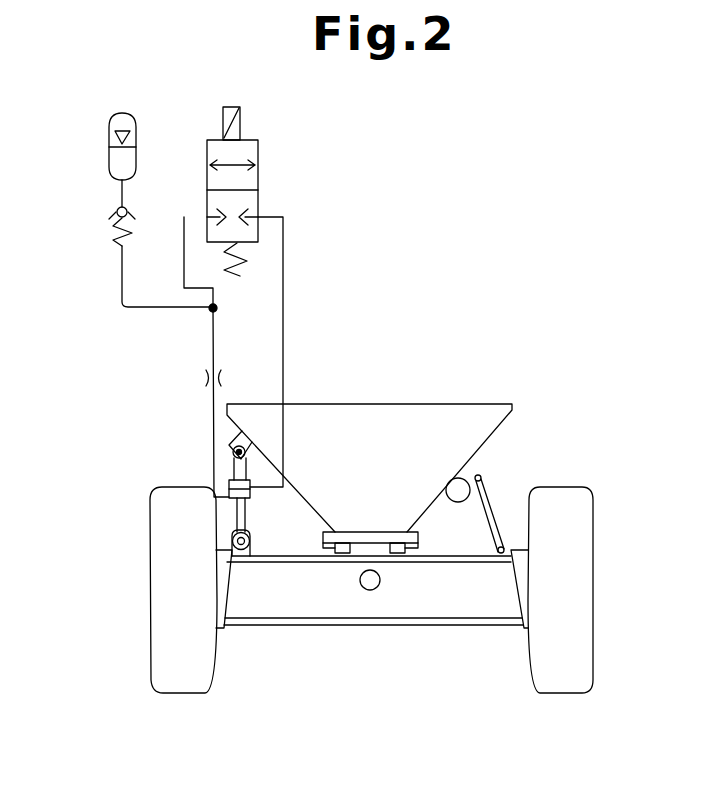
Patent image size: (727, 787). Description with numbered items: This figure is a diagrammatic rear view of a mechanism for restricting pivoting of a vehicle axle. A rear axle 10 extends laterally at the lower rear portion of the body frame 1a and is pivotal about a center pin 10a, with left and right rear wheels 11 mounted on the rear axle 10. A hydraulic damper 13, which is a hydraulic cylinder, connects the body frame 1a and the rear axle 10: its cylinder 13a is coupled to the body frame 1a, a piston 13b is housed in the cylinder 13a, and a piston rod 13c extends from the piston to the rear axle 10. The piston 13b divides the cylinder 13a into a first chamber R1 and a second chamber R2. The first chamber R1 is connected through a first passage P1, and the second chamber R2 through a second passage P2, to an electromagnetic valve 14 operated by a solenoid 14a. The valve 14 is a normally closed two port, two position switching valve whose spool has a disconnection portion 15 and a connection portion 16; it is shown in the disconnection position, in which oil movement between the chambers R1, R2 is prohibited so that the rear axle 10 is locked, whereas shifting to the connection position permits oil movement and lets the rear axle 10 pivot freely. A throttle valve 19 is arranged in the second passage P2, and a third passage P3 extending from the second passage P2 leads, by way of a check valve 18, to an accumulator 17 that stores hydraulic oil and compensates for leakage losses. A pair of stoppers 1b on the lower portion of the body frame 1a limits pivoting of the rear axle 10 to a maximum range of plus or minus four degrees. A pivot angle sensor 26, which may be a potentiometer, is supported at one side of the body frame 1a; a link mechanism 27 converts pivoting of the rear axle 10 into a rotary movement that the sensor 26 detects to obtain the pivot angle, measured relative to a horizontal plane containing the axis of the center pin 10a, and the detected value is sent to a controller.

The body frame 1a is at (490, 432).
The stoppers 1b is at (326, 553).
The rear axle 10 is at (372, 610).
The center pin 10a is at (370, 592).
The rear wheels 11 is at (152, 670).
The hydraulic damper 13 is at (255, 507).
The cylinder 13a is at (247, 512).
The piston 13b is at (258, 500).
The piston rod 13c is at (252, 548).
The electromagnetic valve 14 is at (252, 133).
The solenoid 14a is at (232, 107).
The disconnection portion 15 is at (206, 208).
The connection portion 16 is at (254, 180).
The accumulator 17 is at (108, 136).
The check valve 18 is at (113, 211).
The throttle valve 19 is at (206, 378).
The pivot angle sensor 26 is at (449, 487).
The link mechanism 27 is at (485, 507).
The first passage P1 is at (284, 361).
The second passage P2 is at (212, 422).
The third passage P3 is at (138, 311).
The first chamber R1 is at (229, 487).
The second chamber R2 is at (232, 526).